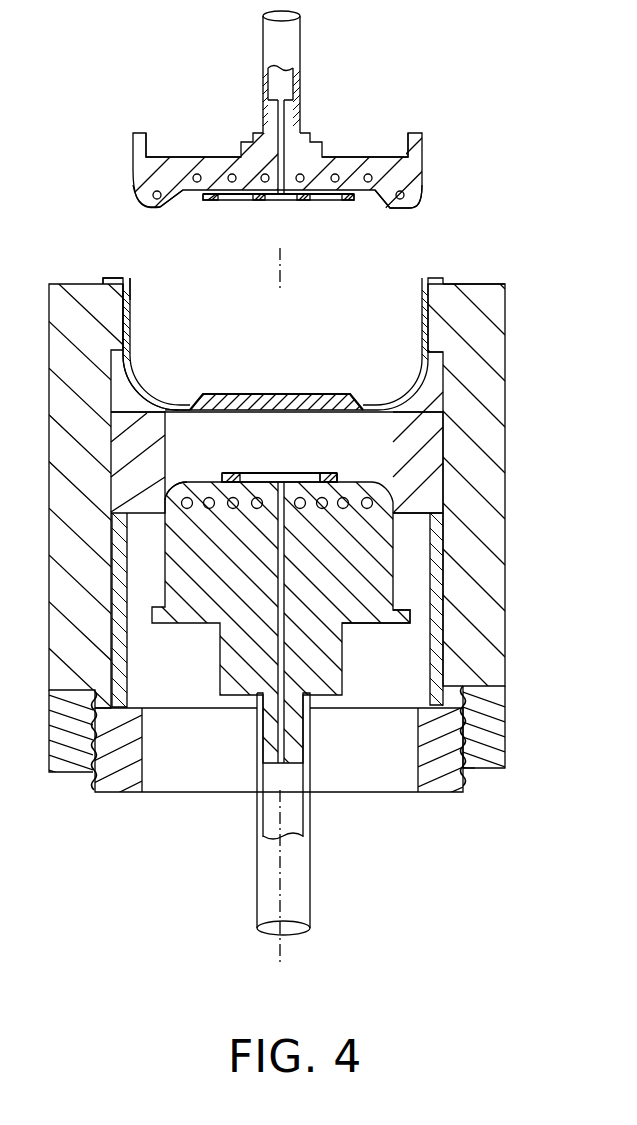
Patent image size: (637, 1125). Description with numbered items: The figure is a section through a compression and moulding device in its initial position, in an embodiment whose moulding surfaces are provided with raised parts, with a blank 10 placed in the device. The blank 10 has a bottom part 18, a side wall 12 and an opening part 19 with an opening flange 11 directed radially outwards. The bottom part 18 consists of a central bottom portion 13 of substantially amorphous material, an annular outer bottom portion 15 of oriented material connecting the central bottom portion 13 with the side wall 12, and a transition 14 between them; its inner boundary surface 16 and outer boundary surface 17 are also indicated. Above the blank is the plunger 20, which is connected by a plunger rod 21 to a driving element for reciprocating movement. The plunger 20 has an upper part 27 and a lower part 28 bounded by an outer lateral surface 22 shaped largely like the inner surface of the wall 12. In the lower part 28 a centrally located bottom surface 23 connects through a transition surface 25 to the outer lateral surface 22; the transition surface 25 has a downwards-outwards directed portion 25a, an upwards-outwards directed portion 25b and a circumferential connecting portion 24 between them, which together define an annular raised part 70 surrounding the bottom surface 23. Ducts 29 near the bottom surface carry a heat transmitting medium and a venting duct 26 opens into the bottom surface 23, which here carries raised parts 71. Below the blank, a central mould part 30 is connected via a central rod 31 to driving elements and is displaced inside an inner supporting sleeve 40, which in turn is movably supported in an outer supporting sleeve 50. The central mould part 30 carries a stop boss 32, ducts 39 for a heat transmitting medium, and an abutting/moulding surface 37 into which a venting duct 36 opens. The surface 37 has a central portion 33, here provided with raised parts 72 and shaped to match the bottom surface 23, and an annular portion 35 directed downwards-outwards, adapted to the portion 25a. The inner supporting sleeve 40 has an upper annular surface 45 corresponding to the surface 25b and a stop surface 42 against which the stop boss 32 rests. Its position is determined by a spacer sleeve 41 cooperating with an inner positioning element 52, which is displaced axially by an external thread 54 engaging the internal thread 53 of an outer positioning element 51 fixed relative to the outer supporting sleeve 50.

The blank 10 is at (358, 320).
The opening flange 11 is at (438, 284).
The side wall 12 is at (131, 317).
The central bottom portion 13 is at (293, 418).
The transition 14 is at (352, 418).
The annular outer bottom portion 15 is at (383, 420).
The inner boundary surface 16 is at (315, 395).
The outer boundary surface 17 is at (241, 420).
The bottom part 18 is at (156, 392).
The opening part 19 is at (131, 273).
The plunger 20 is at (318, 155).
The plunger rod 21 is at (291, 44).
The outer lateral surface 22 is at (418, 152).
The bottom surface 23 is at (362, 198).
The connecting portion 24 is at (152, 291).
The transition surface 25 is at (158, 208).
The downwards-outwards directed portion 25a is at (380, 206).
The upwards-outwards directed portion 25b is at (415, 198).
The venting duct 26 is at (294, 114).
The upper part 27 is at (141, 152).
The lower part 28 is at (382, 186).
The ducts 29 is at (197, 173).
The central mould part 30 is at (211, 608).
The central rod 31 is at (268, 855).
The stop boss 32 is at (405, 613).
The central portion 33 is at (253, 473).
The annular portion 35 is at (199, 469).
The venting duct 36 is at (280, 584).
The abutting/moulding surface 37 is at (377, 482).
The ducts 39 is at (234, 509).
The inner supporting sleeve 40 is at (438, 499).
The spacer sleeve 41 is at (440, 663).
The stop surface 42 is at (401, 516).
The annular surface 45 is at (440, 366).
The outer supporting sleeve 50 is at (500, 401).
The outer positioning element 51 is at (490, 741).
The inner positioning element 52 is at (437, 784).
The internal thread 53 is at (472, 698).
The external thread 54 is at (465, 770).
The annular raised part 70 is at (163, 201).
The raised parts 71 is at (259, 201).
The raised parts 72 is at (250, 476).